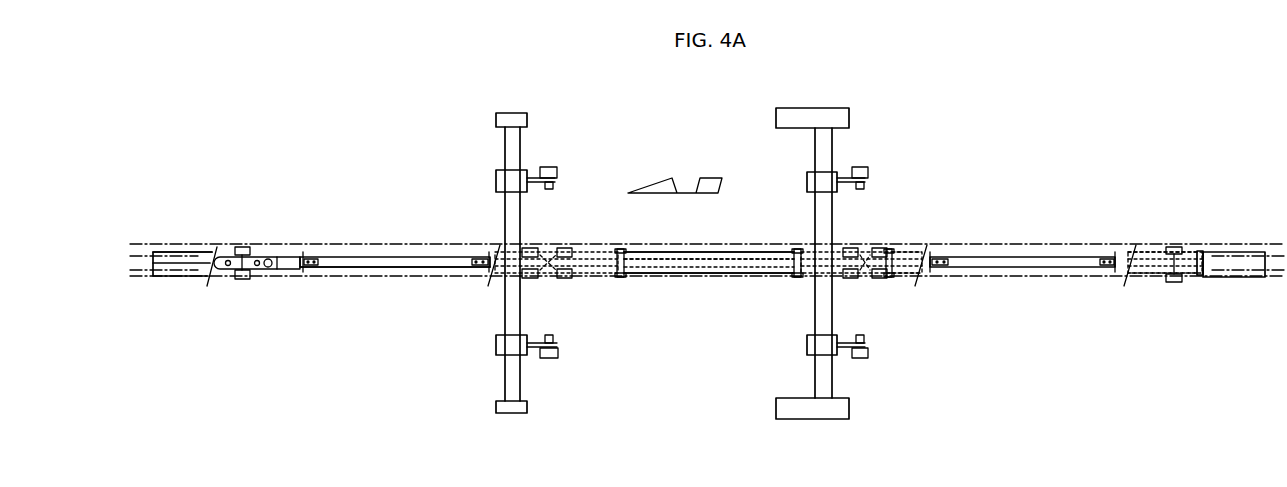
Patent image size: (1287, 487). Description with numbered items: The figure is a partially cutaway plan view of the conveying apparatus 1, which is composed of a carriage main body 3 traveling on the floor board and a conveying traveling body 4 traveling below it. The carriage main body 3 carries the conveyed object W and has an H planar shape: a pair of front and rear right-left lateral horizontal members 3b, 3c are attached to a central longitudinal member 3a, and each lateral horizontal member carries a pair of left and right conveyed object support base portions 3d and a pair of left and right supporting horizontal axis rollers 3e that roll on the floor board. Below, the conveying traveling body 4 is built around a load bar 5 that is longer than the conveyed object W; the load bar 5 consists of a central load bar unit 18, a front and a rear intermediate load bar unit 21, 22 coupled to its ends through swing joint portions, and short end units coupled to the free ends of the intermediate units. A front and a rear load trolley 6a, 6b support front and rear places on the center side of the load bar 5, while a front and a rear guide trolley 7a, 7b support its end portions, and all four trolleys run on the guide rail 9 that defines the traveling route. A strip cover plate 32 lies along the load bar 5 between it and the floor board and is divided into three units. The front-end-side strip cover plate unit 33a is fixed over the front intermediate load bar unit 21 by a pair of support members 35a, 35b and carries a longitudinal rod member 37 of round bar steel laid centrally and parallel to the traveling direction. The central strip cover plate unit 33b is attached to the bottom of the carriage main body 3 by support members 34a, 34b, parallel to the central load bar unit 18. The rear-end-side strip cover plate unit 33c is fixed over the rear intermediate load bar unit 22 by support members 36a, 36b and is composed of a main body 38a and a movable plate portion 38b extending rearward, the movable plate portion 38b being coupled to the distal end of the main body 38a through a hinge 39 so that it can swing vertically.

The conveying apparatus 1 is at (636, 278).
The carriage main body 3 is at (479, 264).
The central longitudinal member 3a is at (692, 278).
The front right-left lateral horizontal member 3b is at (506, 305).
The rear right-left lateral horizontal member 3c is at (818, 298).
The conveyed object support base portion 3d is at (500, 121).
The supporting horizontal axis roller 3e is at (550, 167).
The conveying traveling body 4 is at (362, 254).
The load bar 5 is at (393, 269).
The front load trolley 6a is at (565, 247).
The rear load trolley 6b is at (879, 280).
The front guide trolley 7a is at (245, 247).
The rear guide trolley 7b is at (1176, 282).
The guide rail 9 is at (420, 278).
The central load bar unit 18 is at (710, 262).
The front intermediate load bar unit 21 is at (348, 268).
The rear intermediate load bar unit 22 is at (1012, 268).
The strip cover plate 32 is at (727, 278).
The front-end-side strip cover plate unit 33a is at (211, 252).
The central strip cover plate unit 33b is at (663, 278).
The rear-end-side strip cover plate unit 33c is at (907, 246).
The front support member 34a is at (630, 252).
The rear support member 34b is at (780, 252).
The front support member 35a is at (290, 270).
The rear support member 35b is at (480, 257).
The front support member 36a is at (937, 257).
The rear support member 36b is at (1108, 257).
The longitudinal rod member 37 is at (178, 270).
The main body 38a is at (1144, 278).
The movable plate portion 38b is at (1243, 252).
The hinge 39 is at (1200, 258).
The conveyed object W is at (250, 137).